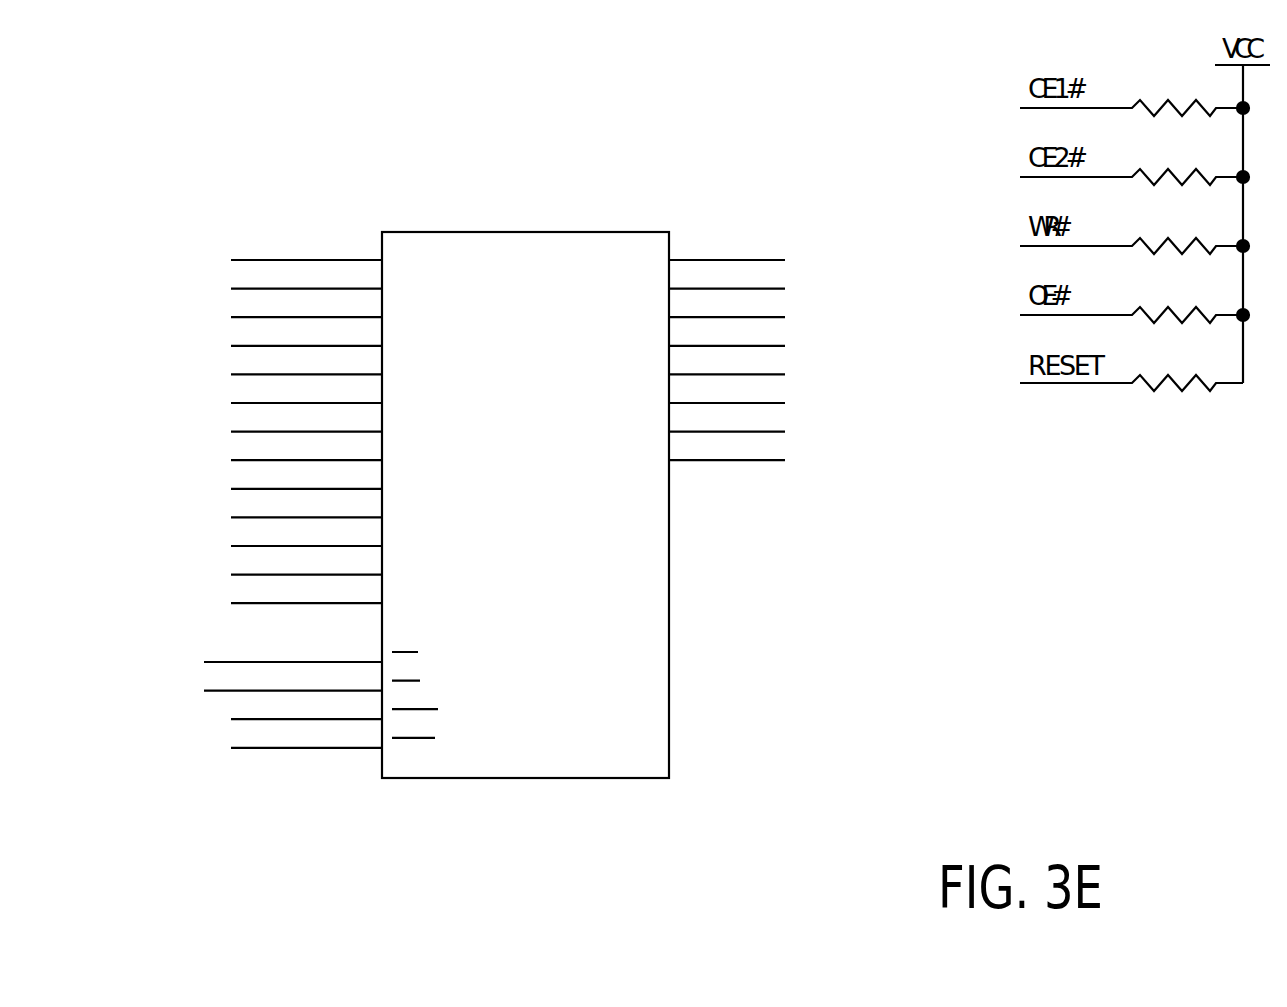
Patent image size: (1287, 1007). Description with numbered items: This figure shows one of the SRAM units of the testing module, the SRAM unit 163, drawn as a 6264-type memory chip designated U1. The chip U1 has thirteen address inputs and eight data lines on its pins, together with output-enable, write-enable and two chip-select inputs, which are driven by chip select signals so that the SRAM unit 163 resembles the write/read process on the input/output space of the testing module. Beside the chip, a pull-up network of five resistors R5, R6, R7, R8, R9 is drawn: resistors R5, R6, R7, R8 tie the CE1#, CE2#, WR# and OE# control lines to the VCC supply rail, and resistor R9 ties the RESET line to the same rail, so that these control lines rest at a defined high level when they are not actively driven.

The SRAM unit 163 is at (494, 467).
The 6264 SRAM integrated circuit U1 is at (545, 178).
The pull-up resistor 33k (CE1#) R5 is at (1131, 82).
The pull-up resistor 33k (CE2#) R6 is at (1131, 151).
The pull-up resistor 33k (WR#) R7 is at (1131, 220).
The pull-up resistor 33k (OE#) R8 is at (1131, 289).
The pull-up resistor 100k (RESET) R9 is at (1131, 357).